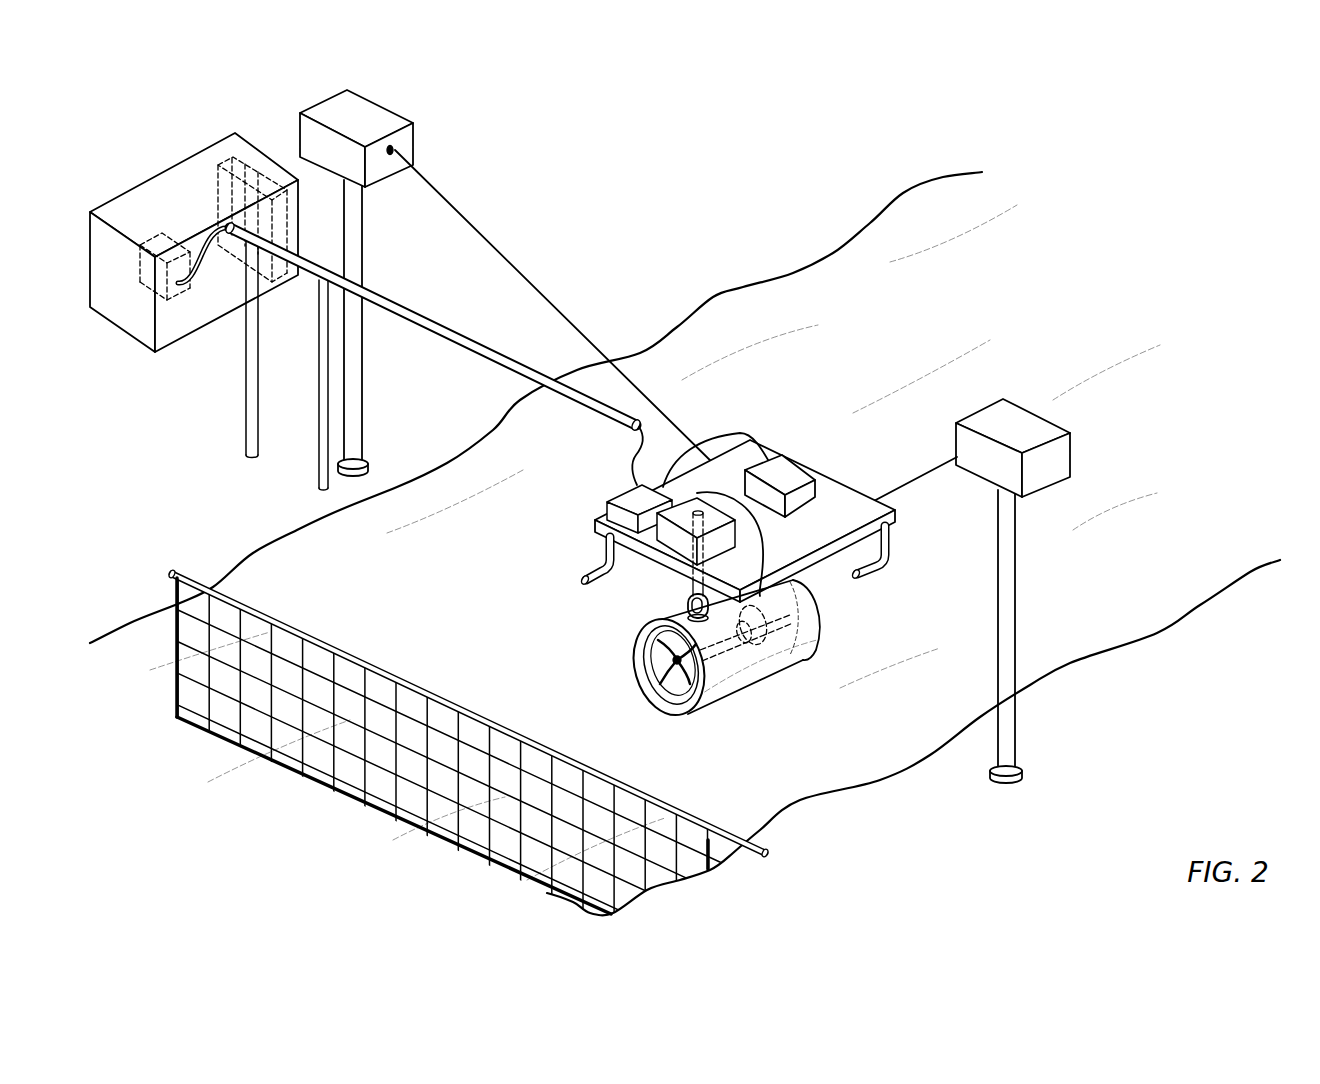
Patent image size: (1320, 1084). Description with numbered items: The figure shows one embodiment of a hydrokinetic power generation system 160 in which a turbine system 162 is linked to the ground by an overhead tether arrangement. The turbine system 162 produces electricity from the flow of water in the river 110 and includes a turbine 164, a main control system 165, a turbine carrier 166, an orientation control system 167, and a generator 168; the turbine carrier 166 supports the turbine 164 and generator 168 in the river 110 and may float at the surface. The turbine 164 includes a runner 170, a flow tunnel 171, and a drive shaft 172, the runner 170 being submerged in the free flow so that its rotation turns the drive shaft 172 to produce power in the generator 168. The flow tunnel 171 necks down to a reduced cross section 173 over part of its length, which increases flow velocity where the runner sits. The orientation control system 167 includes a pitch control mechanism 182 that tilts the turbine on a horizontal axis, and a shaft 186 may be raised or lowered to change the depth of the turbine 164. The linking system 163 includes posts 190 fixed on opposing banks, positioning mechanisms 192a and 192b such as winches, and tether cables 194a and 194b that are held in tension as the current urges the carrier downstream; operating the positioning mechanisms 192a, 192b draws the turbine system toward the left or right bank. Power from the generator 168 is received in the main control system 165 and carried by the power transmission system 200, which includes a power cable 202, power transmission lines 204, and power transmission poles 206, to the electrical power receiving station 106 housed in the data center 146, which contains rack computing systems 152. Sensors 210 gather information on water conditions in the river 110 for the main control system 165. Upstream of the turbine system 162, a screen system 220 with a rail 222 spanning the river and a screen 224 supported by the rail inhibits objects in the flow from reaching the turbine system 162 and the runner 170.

The electrical power receiving station 106 is at (160, 236).
The river 110 is at (1082, 577).
The data center 146 is at (194, 232).
The rack computing systems 152 is at (238, 162).
The hydrokinetic power generation system 160 is at (627, 287).
The turbine system 162 is at (726, 503).
The linking system 163 is at (695, 416).
The turbine 164 is at (745, 678).
The main control system 165 is at (622, 497).
The turbine carrier 166 is at (777, 547).
The orientation control system 167 is at (658, 599).
The generator 168 is at (763, 650).
The runner 170 is at (683, 718).
The flow tunnel 171 is at (808, 658).
The drive shaft 172 is at (736, 668).
The reduced cross section 173 is at (742, 693).
The pitch control mechanism 182 is at (686, 604).
The shaft 186 is at (708, 553).
The posts 190 is at (365, 233).
The positioning mechanism 192a is at (414, 145).
The positioning mechanism 192b is at (1070, 452).
The tether cable 194a is at (478, 231).
The tether cable 194b is at (925, 475).
The power transmission system 200 is at (410, 353).
The power cable 202 is at (628, 448).
The power transmission lines 204 is at (463, 337).
The power transmission poles 206 is at (246, 392).
The sensors 210 is at (592, 571).
The screen system 220 is at (521, 708).
The rail 222 is at (530, 740).
The screen 224 is at (426, 846).